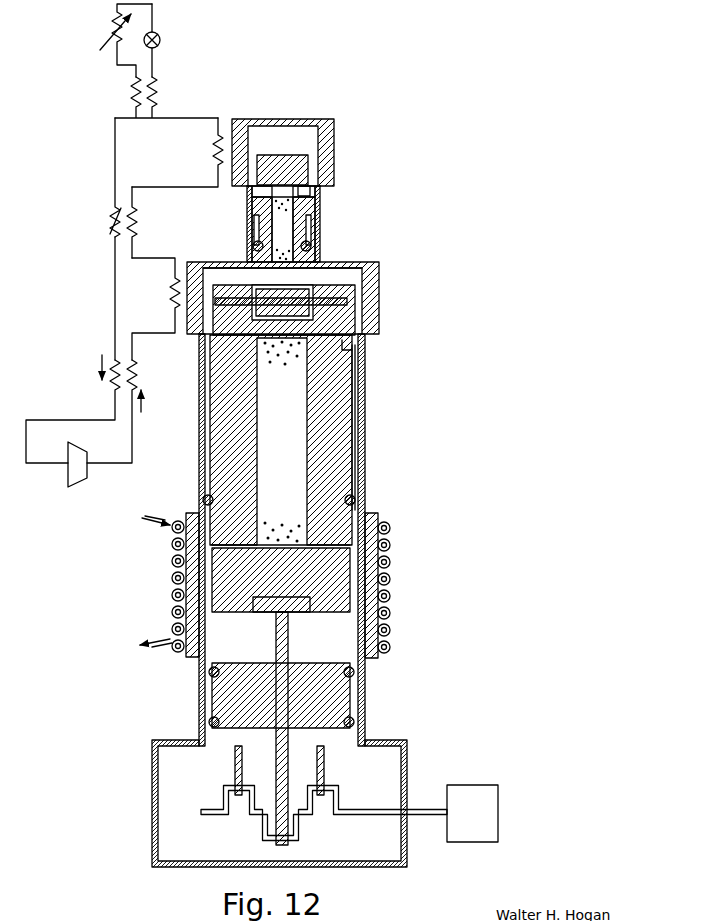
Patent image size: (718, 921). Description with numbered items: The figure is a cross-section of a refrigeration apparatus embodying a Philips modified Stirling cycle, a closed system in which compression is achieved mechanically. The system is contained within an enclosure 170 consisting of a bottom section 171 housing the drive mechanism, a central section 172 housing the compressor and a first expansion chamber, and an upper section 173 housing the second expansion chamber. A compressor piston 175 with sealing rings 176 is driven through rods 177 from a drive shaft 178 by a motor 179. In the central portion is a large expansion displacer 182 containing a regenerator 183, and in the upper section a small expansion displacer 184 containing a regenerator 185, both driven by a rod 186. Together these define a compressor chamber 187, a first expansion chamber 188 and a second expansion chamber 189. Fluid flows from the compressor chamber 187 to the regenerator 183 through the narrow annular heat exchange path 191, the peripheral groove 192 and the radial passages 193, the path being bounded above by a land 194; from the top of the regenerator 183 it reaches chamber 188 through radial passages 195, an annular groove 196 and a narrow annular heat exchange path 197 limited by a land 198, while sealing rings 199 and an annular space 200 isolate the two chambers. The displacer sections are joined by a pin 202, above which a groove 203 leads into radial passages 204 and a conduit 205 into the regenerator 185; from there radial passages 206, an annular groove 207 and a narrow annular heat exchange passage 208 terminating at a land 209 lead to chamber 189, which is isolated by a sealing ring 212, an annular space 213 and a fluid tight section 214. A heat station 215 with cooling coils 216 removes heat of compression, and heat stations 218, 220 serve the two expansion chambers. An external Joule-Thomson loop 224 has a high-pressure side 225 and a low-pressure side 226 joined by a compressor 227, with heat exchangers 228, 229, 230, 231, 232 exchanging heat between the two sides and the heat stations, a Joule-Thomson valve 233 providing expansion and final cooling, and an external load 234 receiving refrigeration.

The enclosure 170 is at (366, 435).
The bottom section 171 is at (407, 768).
The central section 172 is at (365, 461).
The upper section 173 is at (321, 221).
The compressor piston 175 is at (330, 691).
The sealing rings 176 is at (362, 676).
The rods 177 is at (324, 766).
The drive shaft 178 is at (360, 816).
The motor 179 is at (487, 824).
The large expansion displacer 182 is at (345, 398).
The regenerator 183 is at (298, 455).
The small expansion displacer 184 is at (306, 236).
The regenerator 185 is at (281, 228).
The rod 186 is at (280, 718).
The compressor chamber 187 is at (322, 650).
The first expansion chamber 188 is at (348, 282).
The second expansion chamber 189 is at (286, 136).
The narrow annular heat exchange path 191 is at (365, 590).
The peripheral groove 192 is at (361, 528).
The radial passages 193 is at (358, 512).
The land 194 is at (456, 506).
The radial passages 195 is at (352, 349).
The annular groove 196 is at (356, 341).
The narrow annular heat exchange path 197 is at (370, 318).
The land 198 is at (358, 373).
The sealing rings 199 is at (204, 500).
The annular space 200 is at (205, 464).
The pin 202 is at (330, 302).
The groove 203 is at (345, 300).
The radial passages 204 is at (200, 262).
The conduit 205 is at (258, 278).
The radial passages 206 is at (318, 194).
The annular groove 207 is at (332, 185).
The narrow annular heat exchange passage 208 is at (315, 169).
The land 209 is at (255, 205).
The sealing ring 212 is at (325, 258).
The annular space 213 is at (247, 213).
The fluid tight section 214 is at (366, 271).
The heat station 215 is at (389, 631).
The cooling coils 216 is at (389, 597).
The heat station 218 is at (370, 331).
The heat station 220 is at (334, 131).
The external Joule-Thomson loop 224 is at (100, 213).
The high-pressure side 225 is at (132, 433).
The low-pressure side 226 is at (114, 285).
The compressor 227 is at (80, 477).
The heat exchanger 228 is at (135, 380).
The heat exchanger 229 is at (173, 303).
The heat exchanger 230 is at (114, 236).
The heat exchanger 231 is at (216, 150).
The heat exchanger 232 is at (158, 82).
The Joule-Thomson valve 233 is at (161, 40).
The external load 234 is at (104, 40).